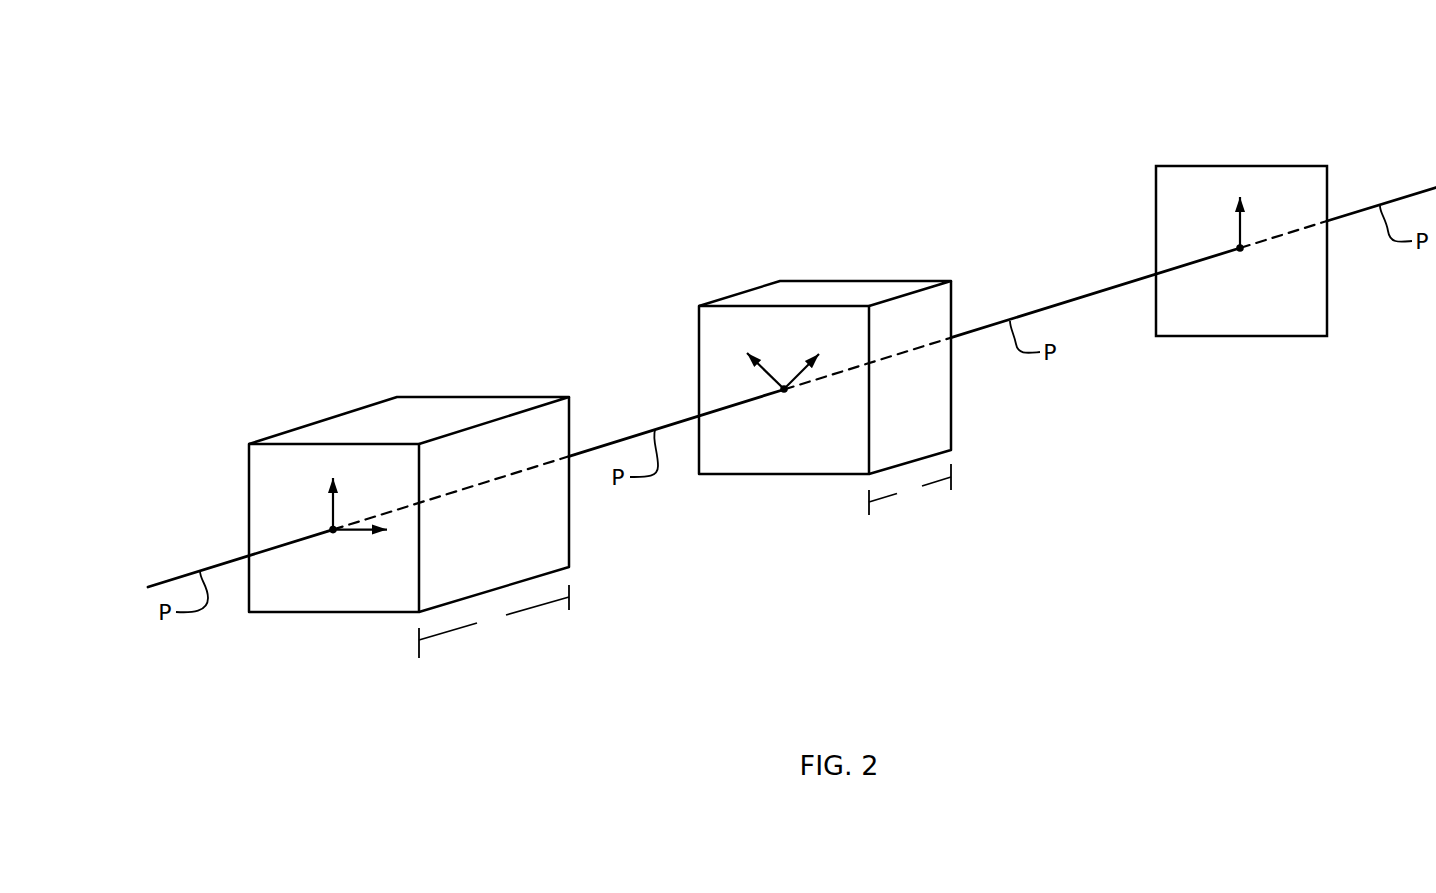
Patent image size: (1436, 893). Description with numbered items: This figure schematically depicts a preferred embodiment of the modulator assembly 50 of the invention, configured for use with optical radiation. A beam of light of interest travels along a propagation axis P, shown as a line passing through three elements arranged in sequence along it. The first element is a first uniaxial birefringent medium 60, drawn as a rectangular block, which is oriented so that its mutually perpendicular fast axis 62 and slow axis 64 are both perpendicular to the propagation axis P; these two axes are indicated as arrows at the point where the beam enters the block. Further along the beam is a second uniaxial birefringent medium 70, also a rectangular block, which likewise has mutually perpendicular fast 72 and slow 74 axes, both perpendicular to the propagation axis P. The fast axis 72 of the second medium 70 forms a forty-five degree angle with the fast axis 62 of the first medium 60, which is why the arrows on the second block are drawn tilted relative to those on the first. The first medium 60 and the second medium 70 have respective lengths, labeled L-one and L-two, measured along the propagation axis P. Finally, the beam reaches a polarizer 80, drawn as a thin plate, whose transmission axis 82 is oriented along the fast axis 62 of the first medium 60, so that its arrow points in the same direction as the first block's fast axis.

The modulator assembly 50 is at (776, 109).
The first uniaxial birefringent medium 60 is at (278, 612).
The fast axis 62 is at (333, 513).
The slow axis 64 is at (358, 532).
The second uniaxial birefringent medium 70 is at (742, 474).
The fast axis 72 is at (768, 372).
The slow axis 74 is at (800, 371).
The polarizer 80 is at (1192, 336).
The transmission axis 82 is at (1240, 229).